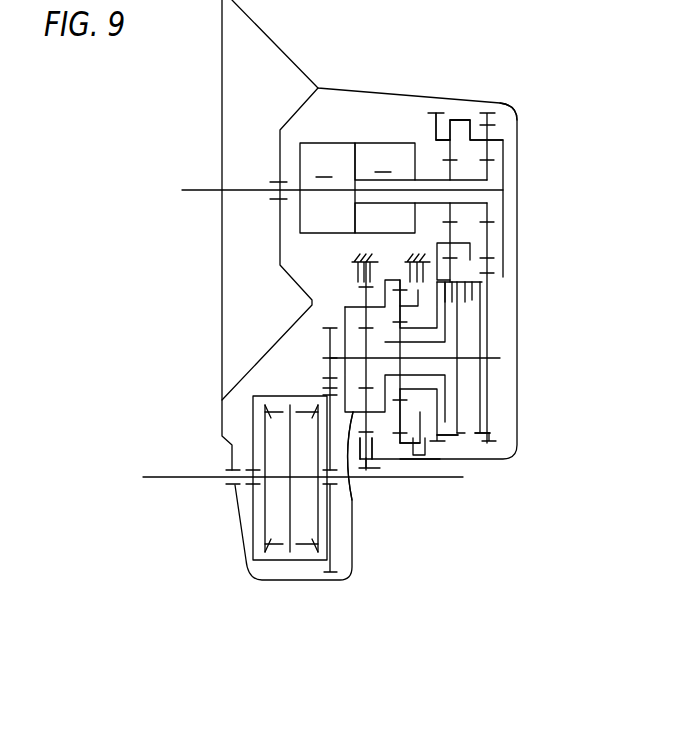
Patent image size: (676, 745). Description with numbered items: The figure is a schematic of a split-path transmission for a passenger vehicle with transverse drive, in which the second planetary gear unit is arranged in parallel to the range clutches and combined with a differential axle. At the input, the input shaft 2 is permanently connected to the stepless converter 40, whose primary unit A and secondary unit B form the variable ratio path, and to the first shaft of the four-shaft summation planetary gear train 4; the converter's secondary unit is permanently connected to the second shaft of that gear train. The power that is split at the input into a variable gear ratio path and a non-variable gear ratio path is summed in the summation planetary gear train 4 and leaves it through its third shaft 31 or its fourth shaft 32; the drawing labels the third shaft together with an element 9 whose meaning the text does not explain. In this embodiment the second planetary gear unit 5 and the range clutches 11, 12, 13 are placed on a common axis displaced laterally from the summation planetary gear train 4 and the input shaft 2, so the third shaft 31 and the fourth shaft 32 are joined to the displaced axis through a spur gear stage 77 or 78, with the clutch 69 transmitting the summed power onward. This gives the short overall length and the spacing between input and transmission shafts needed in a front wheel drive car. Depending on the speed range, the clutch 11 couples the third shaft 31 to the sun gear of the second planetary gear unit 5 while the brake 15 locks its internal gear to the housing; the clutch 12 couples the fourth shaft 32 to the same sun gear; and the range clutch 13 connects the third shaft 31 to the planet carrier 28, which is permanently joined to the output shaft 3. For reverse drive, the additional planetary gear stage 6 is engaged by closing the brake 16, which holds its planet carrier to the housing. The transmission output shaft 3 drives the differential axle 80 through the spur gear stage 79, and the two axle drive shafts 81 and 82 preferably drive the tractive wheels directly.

The input shaft 2 is at (205, 188).
The output shaft 3 is at (330, 348).
The summation planetary gear train 4 is at (477, 86).
The second planetary gear unit 5 is at (340, 300).
The additional planetary gear stage 6 is at (398, 277).
The gear 9 is at (469, 126).
The clutch 11 is at (465, 433).
The clutch 12 is at (488, 433).
The range clutch 13 is at (440, 433).
The clutch (brake) 15 is at (373, 487).
The brake (clutch) 16 is at (422, 460).
The planet carrier 28 is at (370, 490).
The third shaft 31 is at (441, 136).
The fourth shaft 32 is at (518, 109).
The stepless converter 40 is at (355, 132).
The clutch 69 is at (527, 439).
The spur gear stage 77 is at (487, 285).
The spur gear stage 78 is at (455, 247).
The spur gear stage 79 is at (330, 395).
The differential axle 80 is at (283, 562).
The axle drive shaft 81 is at (205, 473).
The axle drive shaft 82 is at (408, 478).